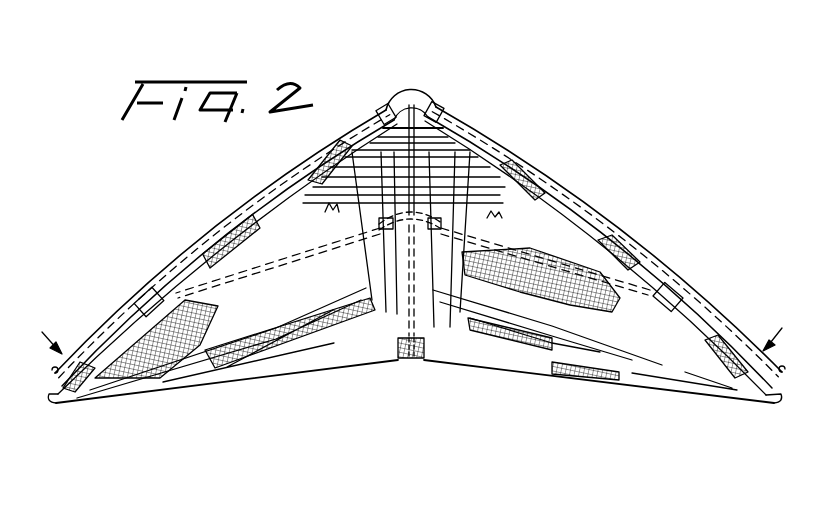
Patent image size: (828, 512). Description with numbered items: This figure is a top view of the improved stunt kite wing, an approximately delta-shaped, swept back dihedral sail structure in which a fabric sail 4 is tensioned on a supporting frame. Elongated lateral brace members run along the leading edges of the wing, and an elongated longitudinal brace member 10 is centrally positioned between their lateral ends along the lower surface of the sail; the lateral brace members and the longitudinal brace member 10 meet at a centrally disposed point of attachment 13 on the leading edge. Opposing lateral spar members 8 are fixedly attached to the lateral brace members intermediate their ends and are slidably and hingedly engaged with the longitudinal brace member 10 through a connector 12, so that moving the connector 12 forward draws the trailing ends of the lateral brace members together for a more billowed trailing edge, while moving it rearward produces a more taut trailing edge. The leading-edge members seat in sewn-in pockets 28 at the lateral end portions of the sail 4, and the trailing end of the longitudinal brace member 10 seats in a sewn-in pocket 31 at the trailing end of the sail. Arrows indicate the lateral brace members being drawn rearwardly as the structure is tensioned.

The fabric sail 4 is at (599, 383).
The lateral spar members 8 is at (282, 255).
The longitudinal brace member 10 is at (404, 242).
The connector 12 is at (468, 178).
The point of attachment 13 is at (420, 95).
The sewn-in pockets 28 is at (65, 402).
The sewn-in pocket 31 is at (408, 360).